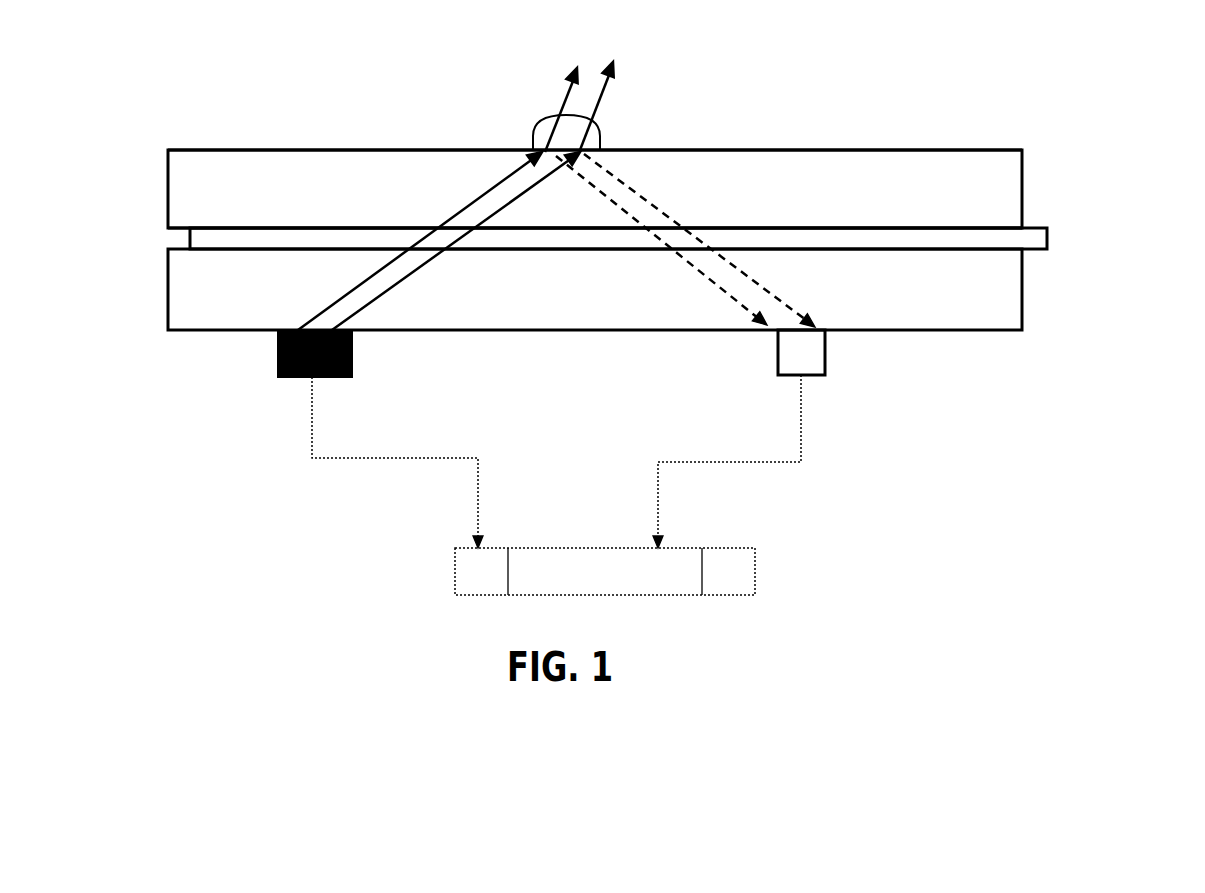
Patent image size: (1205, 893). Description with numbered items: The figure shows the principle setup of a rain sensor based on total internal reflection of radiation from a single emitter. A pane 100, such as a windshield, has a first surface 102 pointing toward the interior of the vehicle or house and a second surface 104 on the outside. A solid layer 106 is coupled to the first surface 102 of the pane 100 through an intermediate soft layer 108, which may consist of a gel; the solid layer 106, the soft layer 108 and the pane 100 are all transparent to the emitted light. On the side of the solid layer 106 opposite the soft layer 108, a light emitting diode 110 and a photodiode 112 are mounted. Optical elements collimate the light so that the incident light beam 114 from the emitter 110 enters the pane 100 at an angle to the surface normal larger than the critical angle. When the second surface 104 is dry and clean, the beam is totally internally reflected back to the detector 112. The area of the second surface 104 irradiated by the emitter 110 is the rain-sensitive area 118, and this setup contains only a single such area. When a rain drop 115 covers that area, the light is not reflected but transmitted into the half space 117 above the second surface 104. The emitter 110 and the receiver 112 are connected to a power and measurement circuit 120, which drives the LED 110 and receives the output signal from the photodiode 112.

The pane 100 is at (167, 190).
The first surface 102 is at (175, 230).
The second surface 104 is at (208, 150).
The solid layer 106 is at (1022, 295).
The intermediate soft layer 108 is at (1023, 240).
The light emitting diode 110 is at (288, 377).
The photodiode 112 is at (825, 350).
The incident light beam 114 is at (490, 195).
The rain drop 115 is at (545, 118).
The half space 117 is at (847, 95).
The rain-sensitive area 118 is at (583, 142).
The power and measurement circuit 120 is at (757, 572).